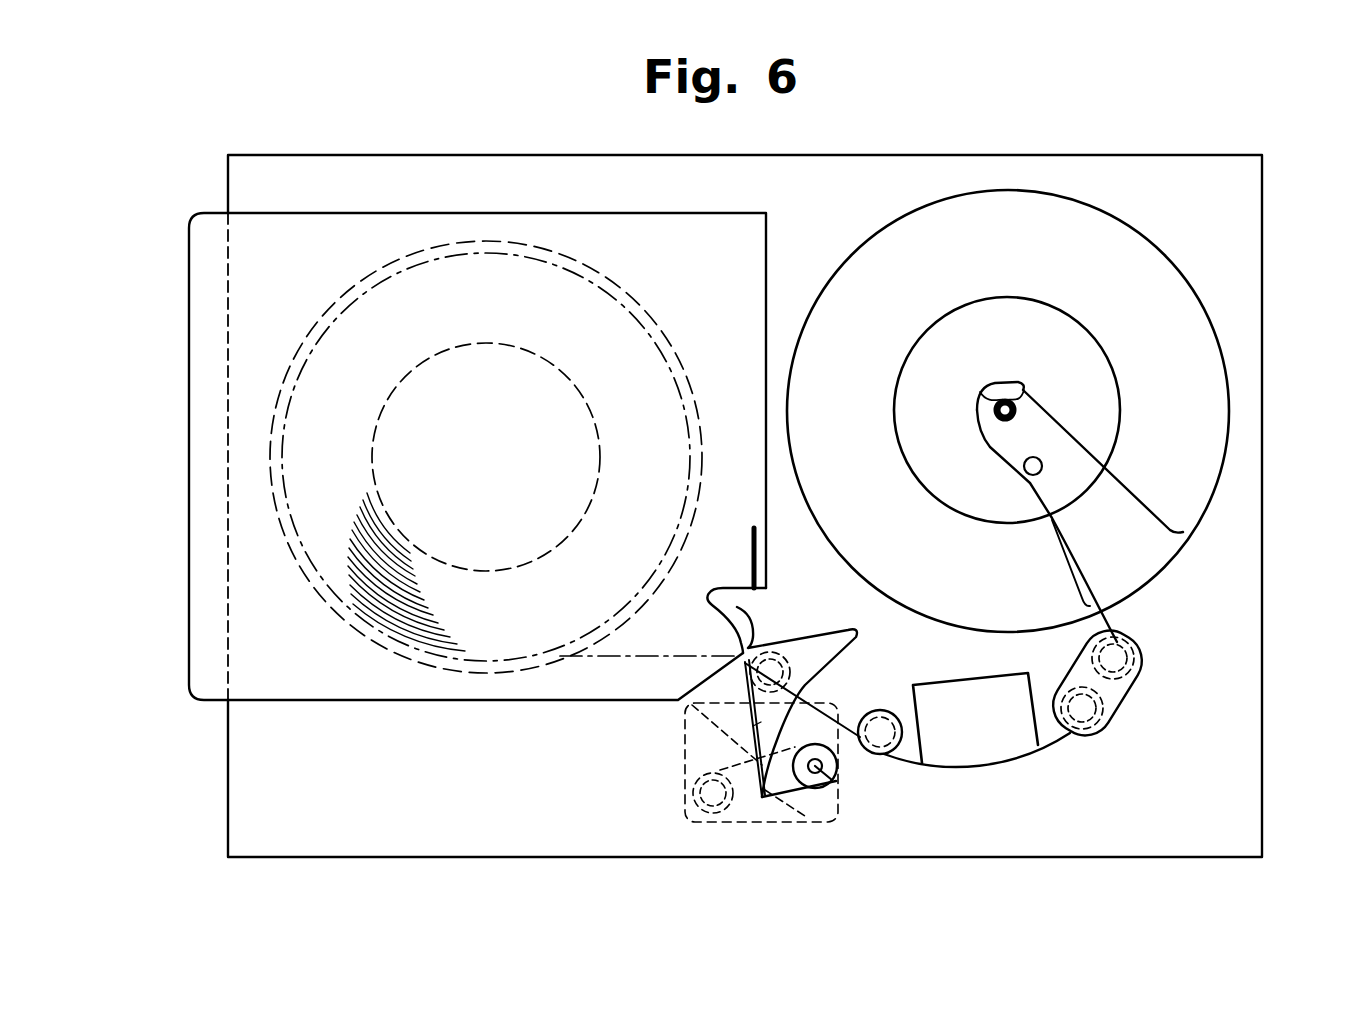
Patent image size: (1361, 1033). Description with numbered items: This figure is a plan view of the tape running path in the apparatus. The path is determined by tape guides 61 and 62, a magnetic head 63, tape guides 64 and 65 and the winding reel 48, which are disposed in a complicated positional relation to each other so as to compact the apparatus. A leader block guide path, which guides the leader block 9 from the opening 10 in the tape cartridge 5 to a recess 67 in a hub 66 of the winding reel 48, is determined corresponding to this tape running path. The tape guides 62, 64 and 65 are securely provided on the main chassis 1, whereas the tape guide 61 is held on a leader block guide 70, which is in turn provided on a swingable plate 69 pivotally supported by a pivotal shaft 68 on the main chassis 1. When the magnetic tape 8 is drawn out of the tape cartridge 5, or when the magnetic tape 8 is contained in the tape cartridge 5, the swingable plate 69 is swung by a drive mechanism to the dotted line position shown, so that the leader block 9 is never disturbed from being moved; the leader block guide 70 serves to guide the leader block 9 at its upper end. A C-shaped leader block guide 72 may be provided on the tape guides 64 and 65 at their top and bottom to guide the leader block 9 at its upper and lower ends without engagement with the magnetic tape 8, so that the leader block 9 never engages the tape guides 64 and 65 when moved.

The main chassis 1 is at (422, 174).
The tape cartridge 5 is at (207, 323).
The magnetic tape 8 is at (600, 658).
The leader block 9 is at (1055, 438).
The opening 10 is at (745, 663).
The winding reel 48 is at (1105, 229).
The tape guide 61 is at (771, 677).
The tape guide 62 is at (882, 742).
The magnetic head 63 is at (988, 740).
The tape guide 64 is at (1083, 708).
The tape guide 65 is at (1115, 657).
The hub 66 is at (1006, 297).
The recess 67 is at (1018, 384).
The pivotal shaft 68 is at (832, 780).
The swingable plate 69 is at (787, 785).
The leader block guide 70 is at (752, 728).
The C-shaped leader block guide 72 is at (1136, 697).